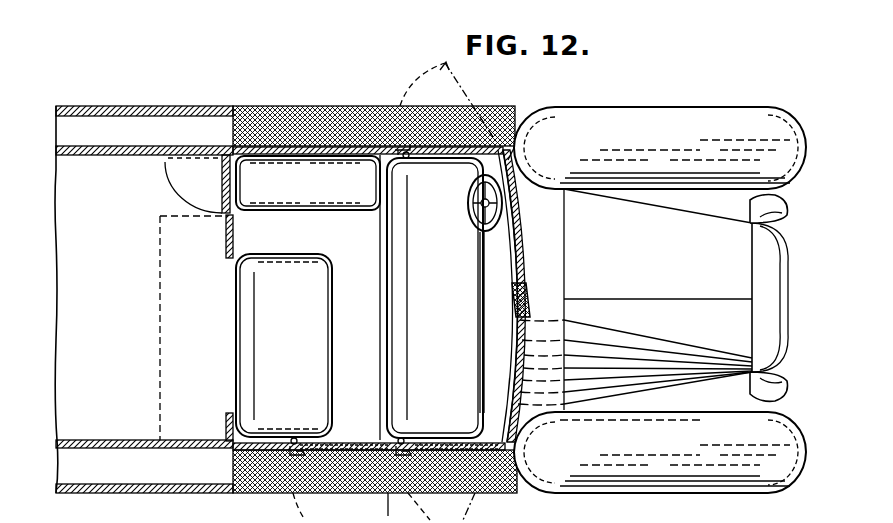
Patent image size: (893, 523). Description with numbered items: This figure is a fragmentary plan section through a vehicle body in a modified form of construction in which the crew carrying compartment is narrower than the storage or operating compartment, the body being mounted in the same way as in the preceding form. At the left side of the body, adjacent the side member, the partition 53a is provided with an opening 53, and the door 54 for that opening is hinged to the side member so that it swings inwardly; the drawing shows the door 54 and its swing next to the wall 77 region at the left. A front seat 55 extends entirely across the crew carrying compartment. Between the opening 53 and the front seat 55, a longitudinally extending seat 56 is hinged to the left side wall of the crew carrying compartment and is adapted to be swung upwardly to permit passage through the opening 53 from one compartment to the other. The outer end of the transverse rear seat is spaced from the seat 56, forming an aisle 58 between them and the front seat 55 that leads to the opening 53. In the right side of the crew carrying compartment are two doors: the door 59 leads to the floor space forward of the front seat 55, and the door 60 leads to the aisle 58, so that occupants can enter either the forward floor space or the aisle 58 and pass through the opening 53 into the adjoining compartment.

The garage wall 77 is at (93, 150).
The door 54 is at (222, 186).
The opening 53 is at (230, 202).
The partition 53a is at (227, 250).
The longitudinally extending seat 56 is at (353, 206).
The aisle 58 is at (345, 344).
The door 60 is at (345, 441).
The door 59 is at (443, 441).
The front seat 55 is at (476, 283).